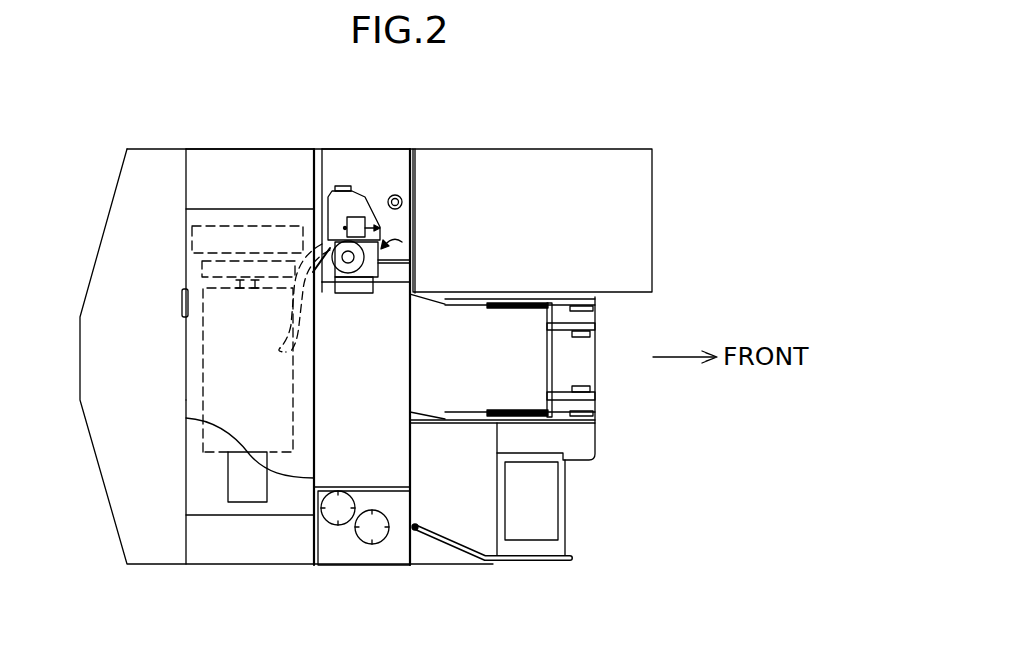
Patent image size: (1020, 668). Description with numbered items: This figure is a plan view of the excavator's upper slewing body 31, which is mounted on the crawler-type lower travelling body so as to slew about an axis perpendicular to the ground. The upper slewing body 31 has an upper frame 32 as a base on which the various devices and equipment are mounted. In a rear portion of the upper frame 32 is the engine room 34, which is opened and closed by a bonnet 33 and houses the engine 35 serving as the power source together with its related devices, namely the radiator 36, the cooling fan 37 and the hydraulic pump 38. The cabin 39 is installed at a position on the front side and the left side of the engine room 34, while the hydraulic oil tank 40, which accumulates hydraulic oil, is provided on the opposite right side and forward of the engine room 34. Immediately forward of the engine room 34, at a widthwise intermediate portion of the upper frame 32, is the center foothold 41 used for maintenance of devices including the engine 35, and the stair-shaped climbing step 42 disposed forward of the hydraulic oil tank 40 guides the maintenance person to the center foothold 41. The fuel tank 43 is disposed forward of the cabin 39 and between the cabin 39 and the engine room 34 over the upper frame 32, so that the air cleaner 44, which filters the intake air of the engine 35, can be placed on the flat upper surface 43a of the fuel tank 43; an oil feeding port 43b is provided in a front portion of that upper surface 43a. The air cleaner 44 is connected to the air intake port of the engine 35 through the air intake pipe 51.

The upper slewing body 31 is at (264, 138).
The upper frame 32 is at (596, 433).
The bonnet 33 is at (197, 362).
The engine room 34 is at (198, 475).
The engine 35 is at (200, 403).
The radiator 36 is at (232, 226).
The cooling fan 37 is at (200, 262).
The hydraulic pump 38 is at (242, 503).
The cabin 39 is at (552, 149).
The hydraulic oil tank 40 is at (363, 555).
The center foothold 41 is at (404, 352).
The climbing step 42 is at (525, 532).
The fuel tank 43 is at (370, 149).
The upper surface 43a is at (393, 161).
The oil feeding port 43b is at (403, 201).
The air cleaner 44 is at (410, 250).
The air intake pipe 51 is at (306, 318).